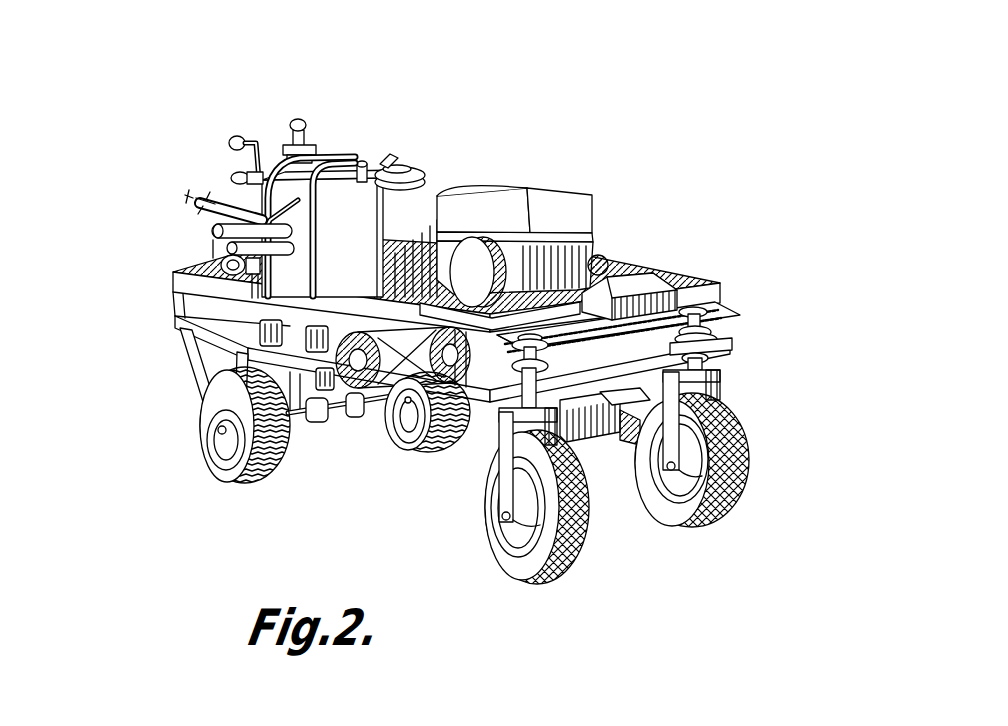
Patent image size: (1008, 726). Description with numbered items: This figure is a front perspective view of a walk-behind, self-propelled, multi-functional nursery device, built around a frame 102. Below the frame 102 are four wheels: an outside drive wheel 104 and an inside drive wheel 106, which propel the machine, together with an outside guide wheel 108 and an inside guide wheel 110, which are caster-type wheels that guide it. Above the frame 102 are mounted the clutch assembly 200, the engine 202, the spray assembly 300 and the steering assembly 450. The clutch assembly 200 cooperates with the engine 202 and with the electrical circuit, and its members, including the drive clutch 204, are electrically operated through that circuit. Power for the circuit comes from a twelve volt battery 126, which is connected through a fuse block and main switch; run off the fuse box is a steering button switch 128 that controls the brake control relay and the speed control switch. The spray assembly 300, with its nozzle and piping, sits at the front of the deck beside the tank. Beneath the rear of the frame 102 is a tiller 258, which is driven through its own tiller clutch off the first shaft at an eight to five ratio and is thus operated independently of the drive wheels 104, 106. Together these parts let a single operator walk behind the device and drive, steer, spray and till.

The clutch assembly 200 is at (357, 293).
The engine 202 is at (542, 193).
The steering button switch 128 is at (305, 145).
The spray assembly 300 is at (203, 180).
The twelve volt battery 126 is at (672, 283).
The steering assembly 450 is at (717, 372).
The inside guide wheel 110 is at (738, 420).
The outside guide wheel 108 is at (512, 560).
The outside drive wheel 104 is at (217, 473).
The inside drive wheel 106 is at (440, 450).
The drive clutch 204 is at (312, 455).
The frame 102 is at (400, 450).
The tiller 258 is at (598, 437).